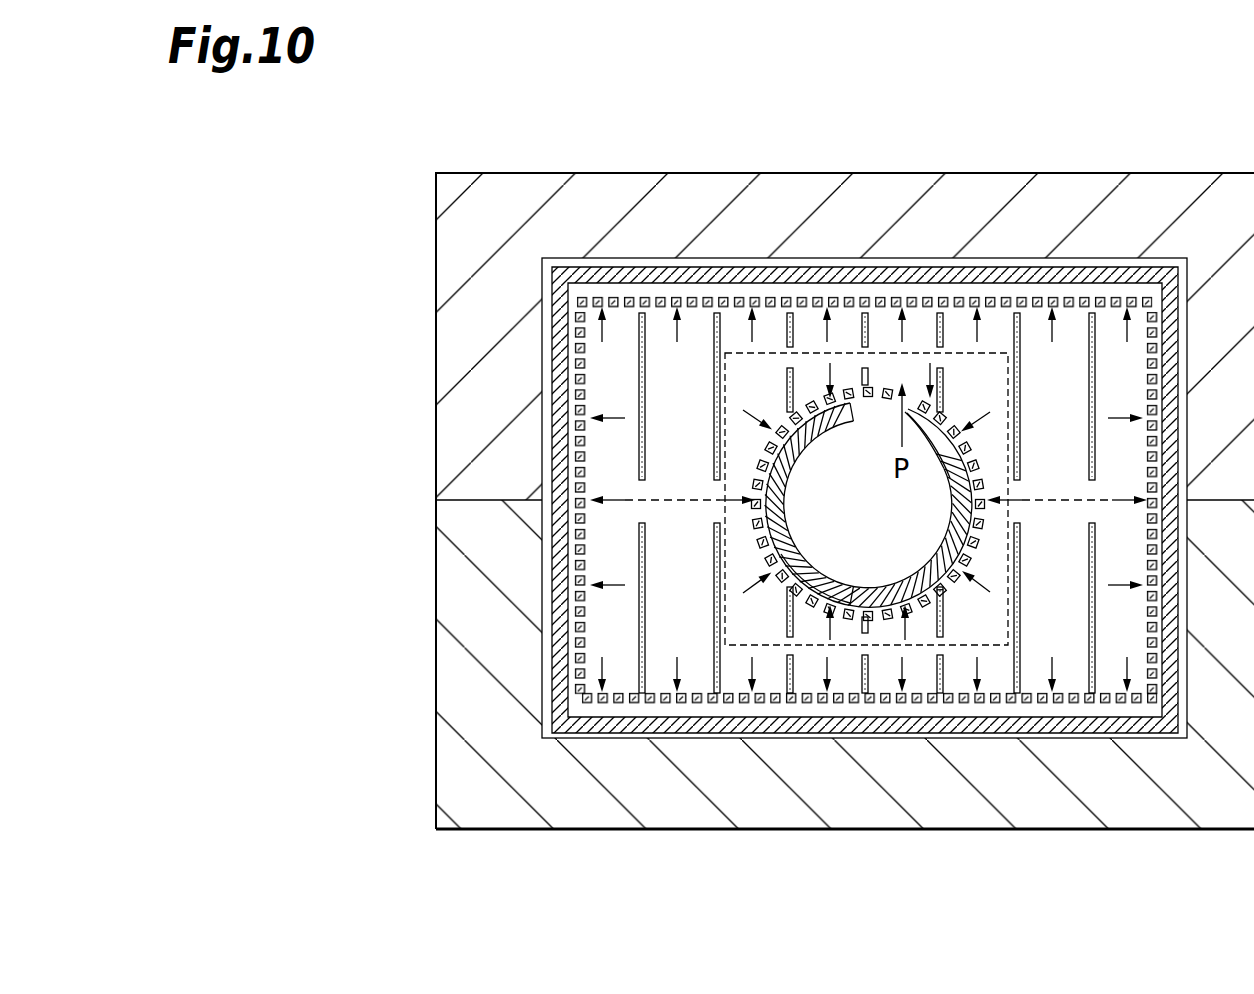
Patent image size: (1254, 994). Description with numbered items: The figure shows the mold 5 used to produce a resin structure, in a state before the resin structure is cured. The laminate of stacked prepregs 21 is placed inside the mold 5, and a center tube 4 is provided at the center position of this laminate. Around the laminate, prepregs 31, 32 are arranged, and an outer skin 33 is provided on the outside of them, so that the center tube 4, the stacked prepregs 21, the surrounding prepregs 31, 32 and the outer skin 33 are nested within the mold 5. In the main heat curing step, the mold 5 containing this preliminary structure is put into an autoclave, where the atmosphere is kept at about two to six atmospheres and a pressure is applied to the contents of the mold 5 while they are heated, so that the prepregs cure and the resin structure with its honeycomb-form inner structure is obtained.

The mold 5 is at (1175, 188).
The center tube 4 is at (842, 597).
The prepregs 21 is at (1020, 662).
The prepreg 31 is at (812, 600).
The prepreg 32 is at (1113, 727).
The outer skin 33 is at (1185, 737).